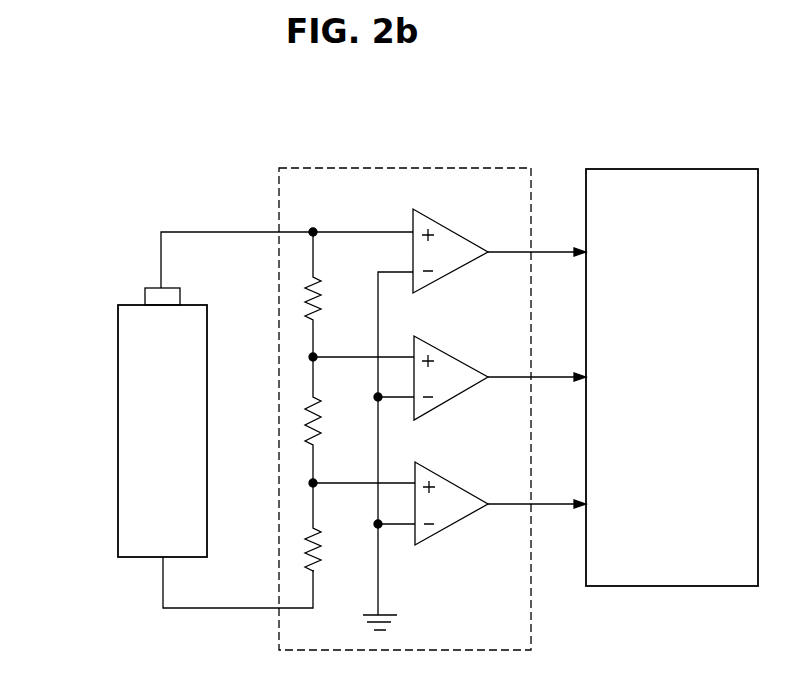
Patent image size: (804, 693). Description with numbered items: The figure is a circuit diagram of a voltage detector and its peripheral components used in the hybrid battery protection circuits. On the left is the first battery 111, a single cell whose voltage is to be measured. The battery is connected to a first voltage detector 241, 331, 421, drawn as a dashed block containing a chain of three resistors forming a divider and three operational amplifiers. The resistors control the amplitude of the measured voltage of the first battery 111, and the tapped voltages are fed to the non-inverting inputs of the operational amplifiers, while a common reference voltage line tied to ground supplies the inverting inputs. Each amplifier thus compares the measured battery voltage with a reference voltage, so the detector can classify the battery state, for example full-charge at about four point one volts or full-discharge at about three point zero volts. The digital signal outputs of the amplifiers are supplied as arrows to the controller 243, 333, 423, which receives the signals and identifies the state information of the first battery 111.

The first battery 111 is at (118, 404).
The first voltage detector 241 is at (432, 376).
The first voltage detector 331 is at (432, 376).
The first voltage detector 421 is at (400, 168).
The controller 243 is at (672, 343).
The controller 333 is at (672, 343).
The controller 423 is at (672, 169).